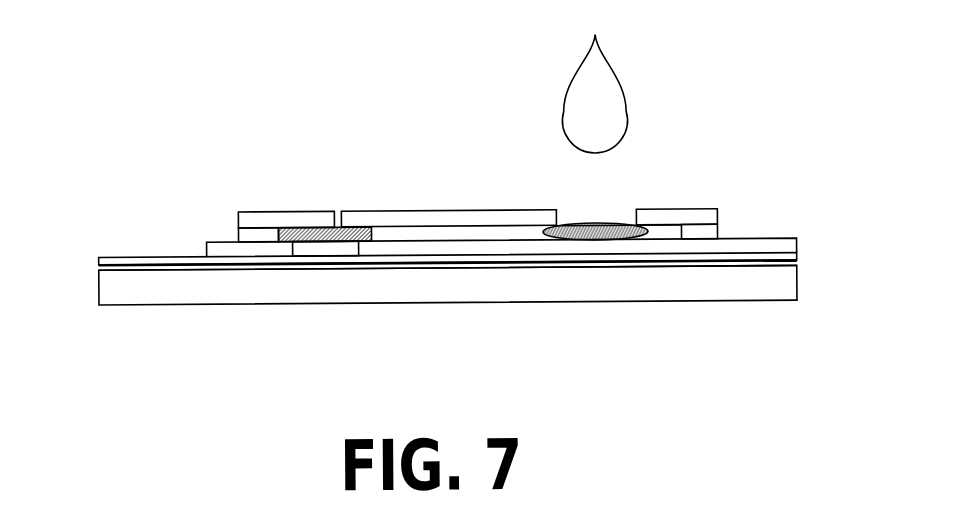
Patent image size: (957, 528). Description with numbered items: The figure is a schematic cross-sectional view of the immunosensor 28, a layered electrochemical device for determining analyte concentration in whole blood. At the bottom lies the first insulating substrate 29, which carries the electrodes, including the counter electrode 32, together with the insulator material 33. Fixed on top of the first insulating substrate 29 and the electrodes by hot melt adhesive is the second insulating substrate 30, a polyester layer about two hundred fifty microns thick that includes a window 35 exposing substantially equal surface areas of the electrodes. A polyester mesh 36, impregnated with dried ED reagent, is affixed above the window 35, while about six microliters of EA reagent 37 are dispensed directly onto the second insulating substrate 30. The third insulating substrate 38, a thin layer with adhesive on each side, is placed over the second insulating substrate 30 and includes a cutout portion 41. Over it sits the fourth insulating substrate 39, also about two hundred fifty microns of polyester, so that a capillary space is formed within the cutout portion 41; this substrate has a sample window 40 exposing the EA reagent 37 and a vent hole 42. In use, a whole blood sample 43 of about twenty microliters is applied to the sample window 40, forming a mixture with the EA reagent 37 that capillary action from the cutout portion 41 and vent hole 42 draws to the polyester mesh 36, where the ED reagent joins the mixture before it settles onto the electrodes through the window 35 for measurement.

The immunosensor 28 is at (121, 222).
The first insulating substrate 29 is at (117, 290).
The second insulating substrate 30 is at (210, 251).
The counter electrode 32 is at (110, 261).
The insulator material 33 is at (100, 270).
The window 35 is at (340, 252).
The polyester mesh 36 is at (314, 232).
The EA reagent 37 is at (602, 234).
The third insulating substrate 38 is at (246, 238).
The fourth insulating substrate 39 is at (264, 221).
The sample window 40 is at (586, 220).
The cutout portion 41 is at (454, 237).
The vent hole 42 is at (338, 228).
The whole blood sample 43 is at (604, 118).